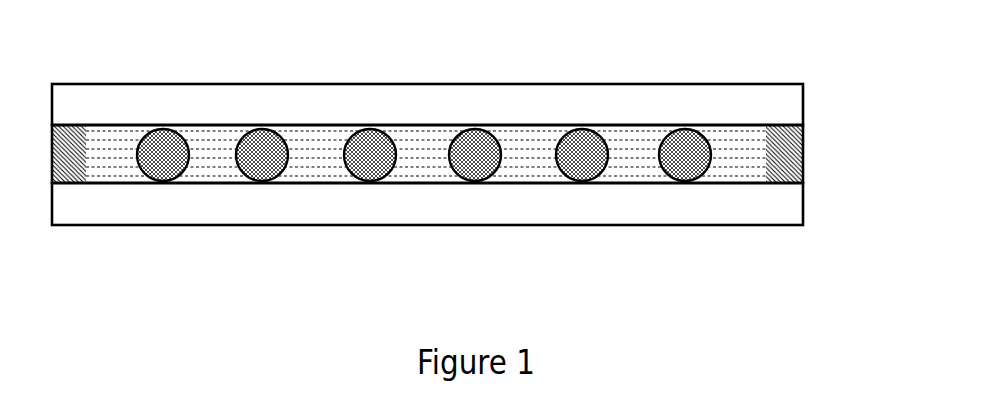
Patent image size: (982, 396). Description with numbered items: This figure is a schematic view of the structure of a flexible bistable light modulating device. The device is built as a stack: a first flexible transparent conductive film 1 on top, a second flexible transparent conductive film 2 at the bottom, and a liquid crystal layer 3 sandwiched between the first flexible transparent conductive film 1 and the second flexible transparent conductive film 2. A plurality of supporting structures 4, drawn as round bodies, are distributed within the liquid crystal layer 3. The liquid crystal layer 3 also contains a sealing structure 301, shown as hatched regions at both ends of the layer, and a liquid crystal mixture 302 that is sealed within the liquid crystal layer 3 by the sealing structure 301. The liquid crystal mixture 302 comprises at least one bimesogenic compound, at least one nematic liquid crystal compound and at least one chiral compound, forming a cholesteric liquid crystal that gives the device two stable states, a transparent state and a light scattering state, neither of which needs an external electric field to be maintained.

The first flexible transparent conductive film 1 is at (806, 105).
The second flexible transparent conductive film 2 is at (806, 203).
The liquid crystal layer 3 is at (462, 209).
The sealing structure 301 is at (63, 147).
The liquid crystal mixture 302 is at (216, 166).
The supporting structures 4 is at (165, 153).